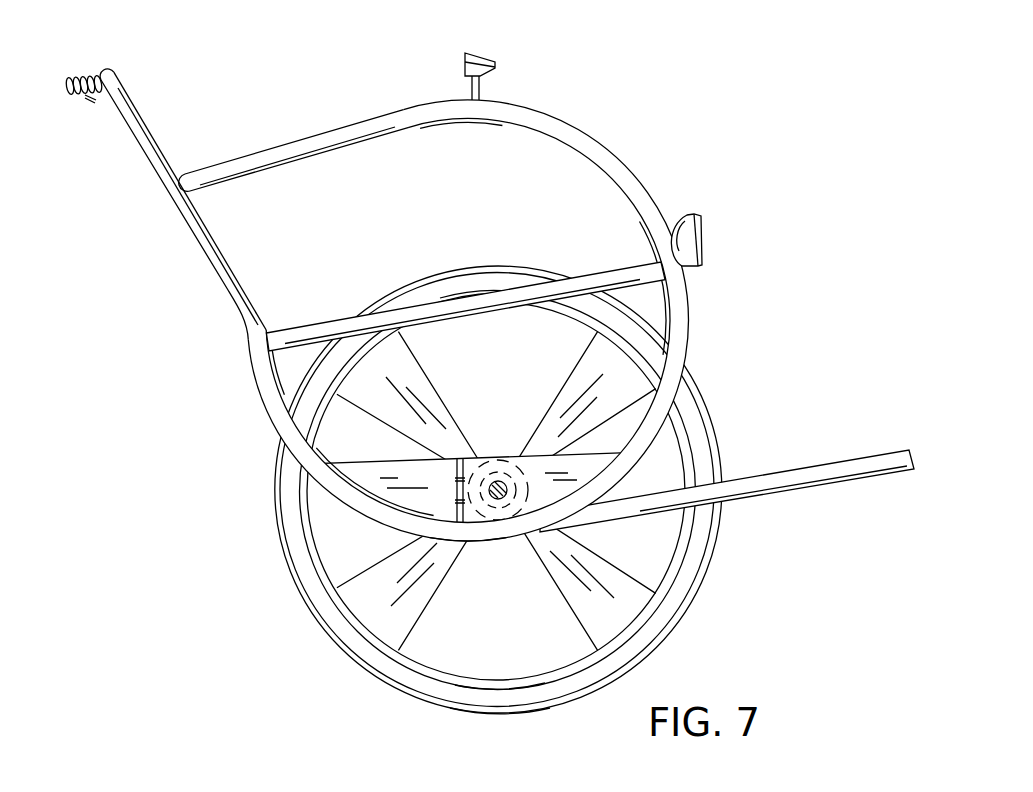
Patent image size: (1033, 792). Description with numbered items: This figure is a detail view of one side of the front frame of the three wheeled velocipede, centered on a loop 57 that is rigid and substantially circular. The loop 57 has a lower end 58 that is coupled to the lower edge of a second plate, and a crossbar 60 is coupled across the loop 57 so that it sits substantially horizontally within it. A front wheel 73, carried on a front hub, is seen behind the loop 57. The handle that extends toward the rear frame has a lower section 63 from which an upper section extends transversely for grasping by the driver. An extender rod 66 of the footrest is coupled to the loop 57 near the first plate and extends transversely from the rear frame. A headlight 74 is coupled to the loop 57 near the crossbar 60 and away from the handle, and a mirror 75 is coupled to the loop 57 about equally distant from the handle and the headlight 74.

The loop 57 is at (549, 124).
The lower end 58 is at (495, 547).
The crossbar 60 is at (298, 339).
The lower section 63 is at (146, 120).
The extender rod 66 is at (785, 482).
The front wheel 73 is at (342, 643).
The headlight 74 is at (697, 210).
The mirror 75 is at (483, 52).